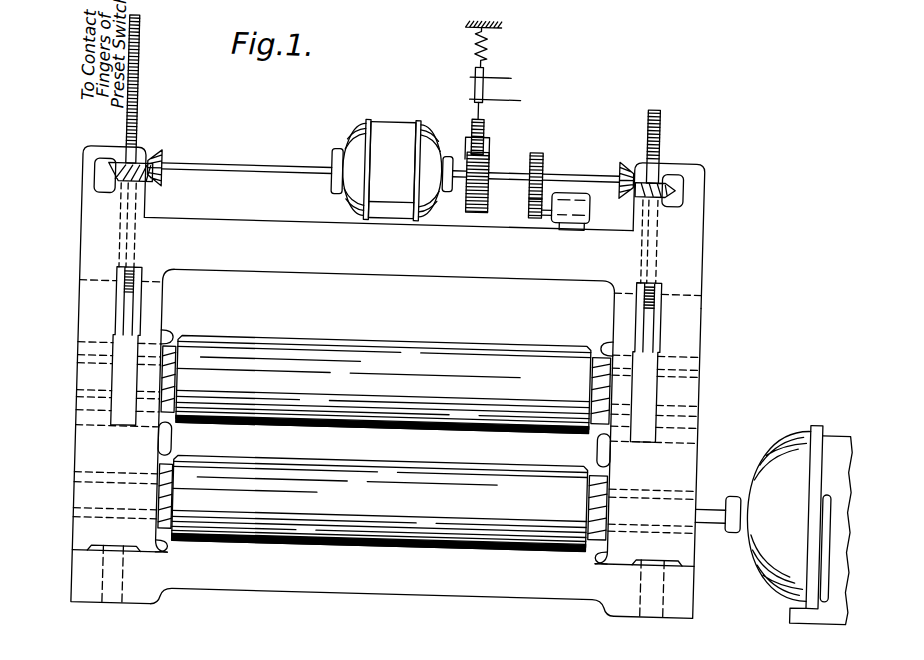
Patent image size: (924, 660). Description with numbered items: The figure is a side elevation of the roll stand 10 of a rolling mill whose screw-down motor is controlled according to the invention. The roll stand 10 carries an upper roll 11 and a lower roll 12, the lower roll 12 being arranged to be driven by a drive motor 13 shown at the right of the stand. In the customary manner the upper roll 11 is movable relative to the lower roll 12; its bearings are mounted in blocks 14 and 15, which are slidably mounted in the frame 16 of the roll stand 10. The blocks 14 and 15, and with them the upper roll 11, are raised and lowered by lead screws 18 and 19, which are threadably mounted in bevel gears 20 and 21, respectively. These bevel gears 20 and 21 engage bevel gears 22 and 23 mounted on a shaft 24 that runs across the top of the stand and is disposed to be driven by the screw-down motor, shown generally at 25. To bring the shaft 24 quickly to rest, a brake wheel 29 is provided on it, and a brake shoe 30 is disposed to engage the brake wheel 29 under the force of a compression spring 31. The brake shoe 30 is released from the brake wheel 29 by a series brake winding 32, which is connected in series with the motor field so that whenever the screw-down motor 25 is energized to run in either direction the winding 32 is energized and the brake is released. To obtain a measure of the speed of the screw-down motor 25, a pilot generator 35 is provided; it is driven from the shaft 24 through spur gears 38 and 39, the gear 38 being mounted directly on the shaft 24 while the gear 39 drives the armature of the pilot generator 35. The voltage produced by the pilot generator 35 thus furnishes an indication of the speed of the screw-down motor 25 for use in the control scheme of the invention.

The roll stand 10 is at (733, 275).
The upper roll 11 is at (474, 340).
The lower roll 12 is at (452, 458).
The drive motor 13 is at (801, 398).
The block 14 is at (131, 354).
The block 15 is at (648, 356).
The frame 16 is at (697, 246).
The lead screw 18 is at (128, 117).
The lead screw 19 is at (652, 145).
The bevel gear 20 is at (145, 188).
The bevel gear 21 is at (628, 186).
The bevel gear 22 is at (156, 158).
The bevel gear 23 is at (624, 170).
The shaft 24 is at (276, 166).
The screw-down motor 25 is at (364, 110).
The brake wheel 29 is at (481, 154).
The brake shoe 30 is at (478, 124).
The compression spring 31 is at (478, 52).
The series brake winding 32 is at (476, 84).
The pilot generator 35 is at (589, 188).
The spur gear 38 is at (524, 186).
The spur gear 39 is at (524, 210).